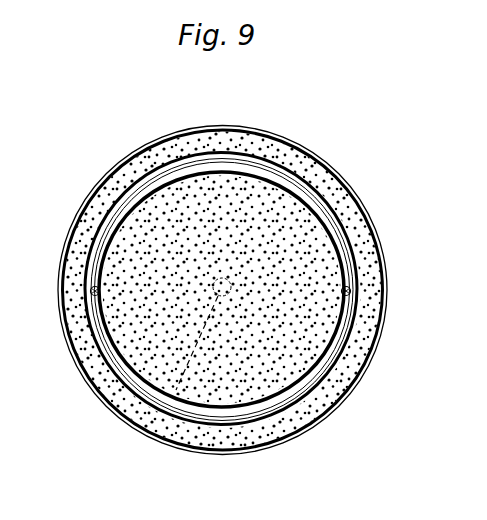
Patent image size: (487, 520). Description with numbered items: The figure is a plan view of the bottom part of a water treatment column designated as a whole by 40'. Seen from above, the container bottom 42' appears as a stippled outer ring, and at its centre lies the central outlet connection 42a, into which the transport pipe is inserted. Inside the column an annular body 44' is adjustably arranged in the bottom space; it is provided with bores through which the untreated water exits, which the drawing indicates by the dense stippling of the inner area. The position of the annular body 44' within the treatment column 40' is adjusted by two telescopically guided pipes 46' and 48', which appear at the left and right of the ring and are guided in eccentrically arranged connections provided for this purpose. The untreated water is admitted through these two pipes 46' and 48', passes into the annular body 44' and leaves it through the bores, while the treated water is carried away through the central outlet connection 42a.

The treatment column 40' is at (238, 277).
The container bottom 42' is at (223, 297).
The central outlet connection 42a is at (165, 404).
The annular body 44' is at (211, 261).
The telescopically guided pipe 46' is at (68, 329).
The telescopically guided pipe 48' is at (386, 332).